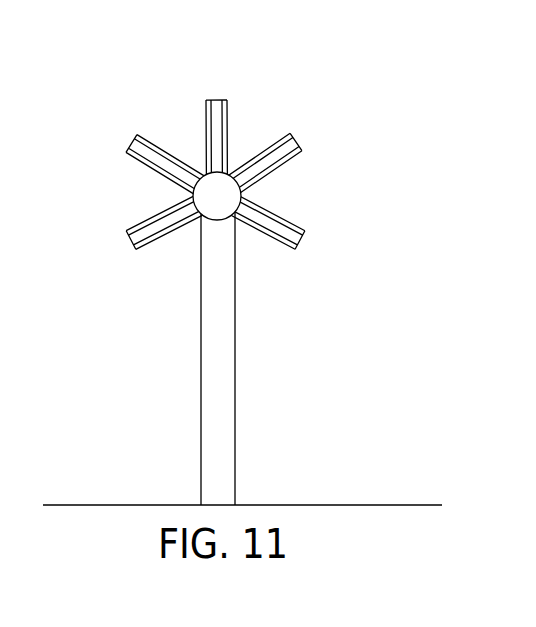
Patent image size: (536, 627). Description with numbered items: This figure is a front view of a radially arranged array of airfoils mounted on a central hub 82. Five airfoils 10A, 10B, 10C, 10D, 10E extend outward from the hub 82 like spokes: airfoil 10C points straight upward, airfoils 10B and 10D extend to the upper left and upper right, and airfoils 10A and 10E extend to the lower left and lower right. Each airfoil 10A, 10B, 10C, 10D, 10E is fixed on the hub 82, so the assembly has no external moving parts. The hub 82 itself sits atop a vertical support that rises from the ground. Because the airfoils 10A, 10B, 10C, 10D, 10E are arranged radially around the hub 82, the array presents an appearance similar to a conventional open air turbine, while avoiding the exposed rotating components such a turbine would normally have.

The airfoil 10A is at (128, 236).
The airfoil 10B is at (135, 140).
The airfoil 10C is at (215, 115).
The airfoil 10D is at (303, 157).
The airfoil 10E is at (303, 243).
The hub 82 is at (226, 193).